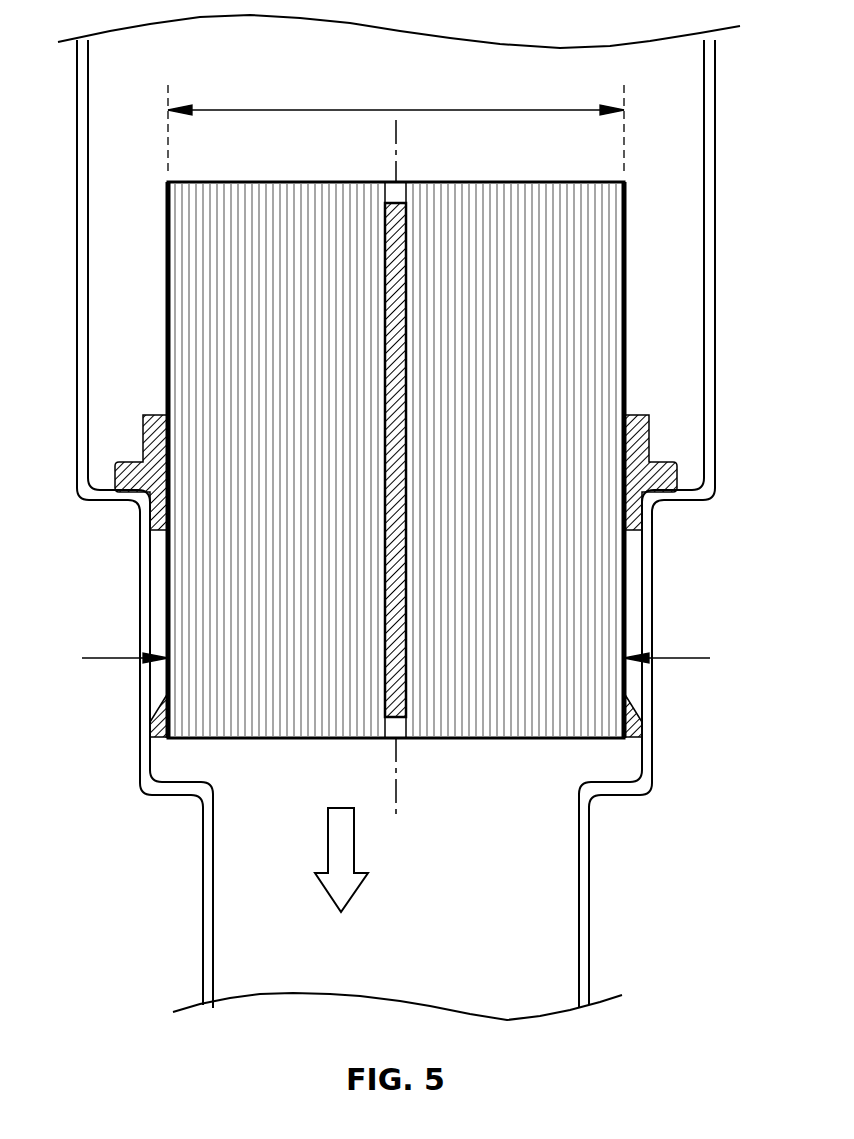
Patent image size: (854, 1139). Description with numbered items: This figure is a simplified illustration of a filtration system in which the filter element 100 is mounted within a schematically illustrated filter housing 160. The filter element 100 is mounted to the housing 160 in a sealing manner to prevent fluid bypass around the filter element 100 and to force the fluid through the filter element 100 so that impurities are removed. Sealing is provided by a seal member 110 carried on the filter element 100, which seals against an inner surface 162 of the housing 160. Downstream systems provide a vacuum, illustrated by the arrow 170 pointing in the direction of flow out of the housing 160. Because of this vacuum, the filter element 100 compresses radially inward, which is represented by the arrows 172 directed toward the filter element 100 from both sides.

The filter element 100 is at (475, 790).
The seal member 110 is at (155, 730).
The filter housing 160 is at (140, 624).
The inner surface 162 is at (158, 563).
The arrow 170 is at (328, 827).
The arrows 172 is at (240, 108).